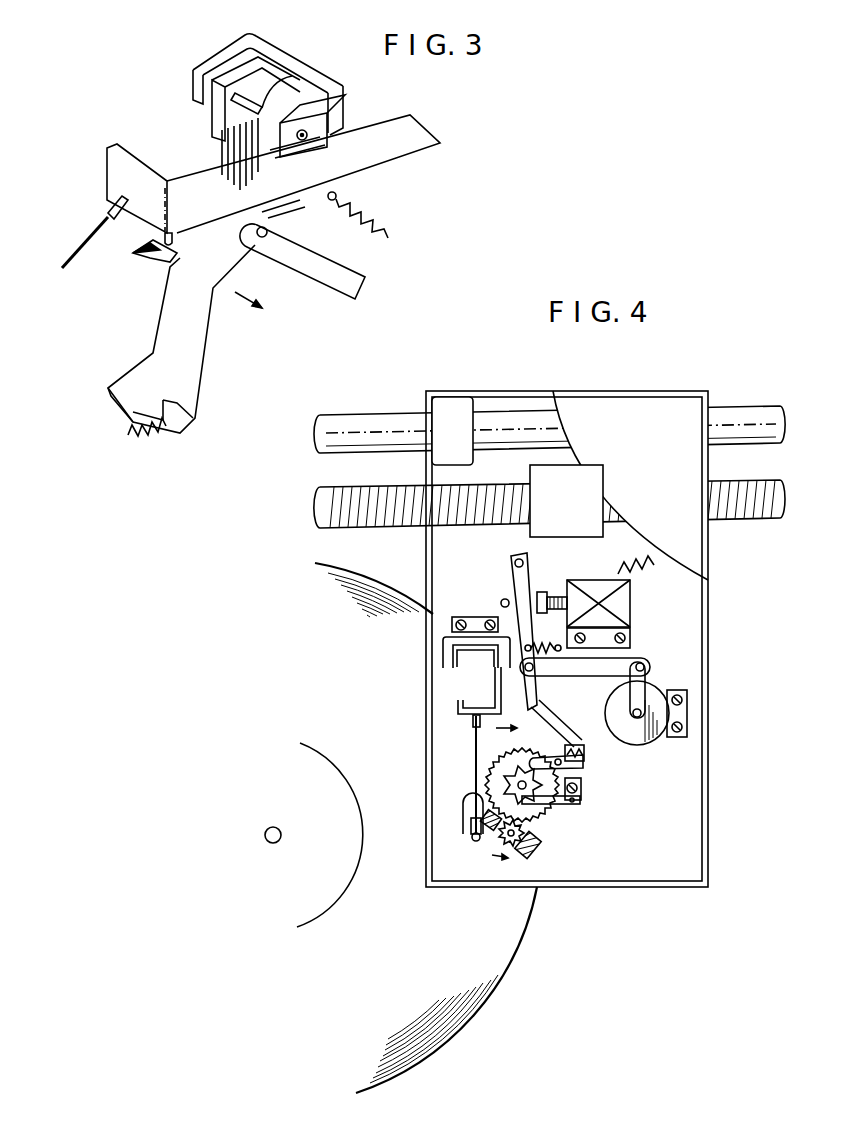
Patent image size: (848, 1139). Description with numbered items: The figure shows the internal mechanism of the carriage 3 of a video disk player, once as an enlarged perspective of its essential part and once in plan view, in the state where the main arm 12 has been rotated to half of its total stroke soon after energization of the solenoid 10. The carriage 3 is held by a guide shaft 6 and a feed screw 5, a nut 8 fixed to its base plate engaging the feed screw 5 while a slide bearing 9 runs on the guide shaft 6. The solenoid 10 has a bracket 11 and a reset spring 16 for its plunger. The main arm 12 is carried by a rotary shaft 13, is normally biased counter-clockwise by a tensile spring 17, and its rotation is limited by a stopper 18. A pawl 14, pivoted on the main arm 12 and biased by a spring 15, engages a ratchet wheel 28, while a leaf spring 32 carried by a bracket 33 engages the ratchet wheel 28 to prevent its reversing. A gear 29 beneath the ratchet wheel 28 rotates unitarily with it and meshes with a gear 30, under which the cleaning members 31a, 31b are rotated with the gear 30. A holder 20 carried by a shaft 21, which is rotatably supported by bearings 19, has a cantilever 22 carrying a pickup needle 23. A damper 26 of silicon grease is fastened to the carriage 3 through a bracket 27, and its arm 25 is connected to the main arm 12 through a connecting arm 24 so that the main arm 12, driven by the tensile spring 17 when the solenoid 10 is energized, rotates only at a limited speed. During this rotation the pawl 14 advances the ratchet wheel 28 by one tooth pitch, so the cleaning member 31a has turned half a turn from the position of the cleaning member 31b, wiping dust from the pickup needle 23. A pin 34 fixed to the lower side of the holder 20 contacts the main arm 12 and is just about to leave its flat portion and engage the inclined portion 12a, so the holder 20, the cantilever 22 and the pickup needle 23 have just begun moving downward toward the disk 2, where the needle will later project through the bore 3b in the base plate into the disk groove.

In FIG. 4, the disk-shaped recording medium 2 is at (511, 948).
In FIG. 4, the carriage 3 is at (583, 392).
In FIG. 4, the bore 3b is at (463, 814).
In FIG. 4, the feed screw 5 is at (750, 520).
In FIG. 4, the guide shaft 6 is at (748, 408).
In FIG. 4, the nut 8 is at (590, 538).
In FIG. 4, the slide block 9 is at (452, 398).
In FIG. 4, the solenoid 10 is at (603, 580).
In FIG. 4, the bracket 11 is at (632, 641).
In FIG. 3, the main arm 12 is at (414, 153).
In FIG. 4, the main arm 12 is at (538, 718).
In FIG. 3, the inclined portion 12a is at (151, 243).
In FIG. 4, the rotary shaft 13 is at (511, 558).
In FIG. 4, the pawl 14 is at (582, 782).
In FIG. 3, the spring 15 is at (139, 440).
In FIG. 4, the spring 15 is at (580, 745).
In FIG. 4, the reset spring 16 is at (553, 590).
In FIG. 3, the tensile spring 17 is at (384, 234).
In FIG. 4, the tensile spring 17 is at (549, 645).
In FIG. 4, the stopper 18 is at (503, 599).
In FIG. 3, the bearings 19 is at (270, 57).
In FIG. 4, the bearings 19 is at (478, 616).
In FIG. 3, the holder 20 is at (106, 166).
In FIG. 4, the holder 20 is at (500, 692).
In FIG. 3, the shaft 21 is at (304, 70).
In FIG. 4, the shaft 21 is at (453, 668).
In FIG. 3, the cantilever 22 is at (92, 238).
In FIG. 4, the cantilever 22 is at (475, 758).
In FIG. 4, the pickup needle 23 is at (473, 838).
In FIG. 3, the connecting arm 24 is at (335, 275).
In FIG. 4, the connecting arm 24 is at (606, 676).
In FIG. 4, the arm 25 is at (652, 672).
In FIG. 4, the damper 26 is at (634, 746).
In FIG. 4, the bracket 27 is at (670, 738).
In FIG. 4, the ratchet wheel 28 is at (550, 800).
In FIG. 4, the gear 29 is at (534, 848).
In FIG. 4, the gear 30 is at (513, 847).
In FIG. 4, the cleaning member 31a is at (531, 860).
In FIG. 4, the cleaning member 31b is at (490, 830).
In FIG. 4, the leaf spring 32 is at (574, 805).
In FIG. 4, the bracket 33 is at (583, 800).
In FIG. 3, the pin 34 is at (163, 255).